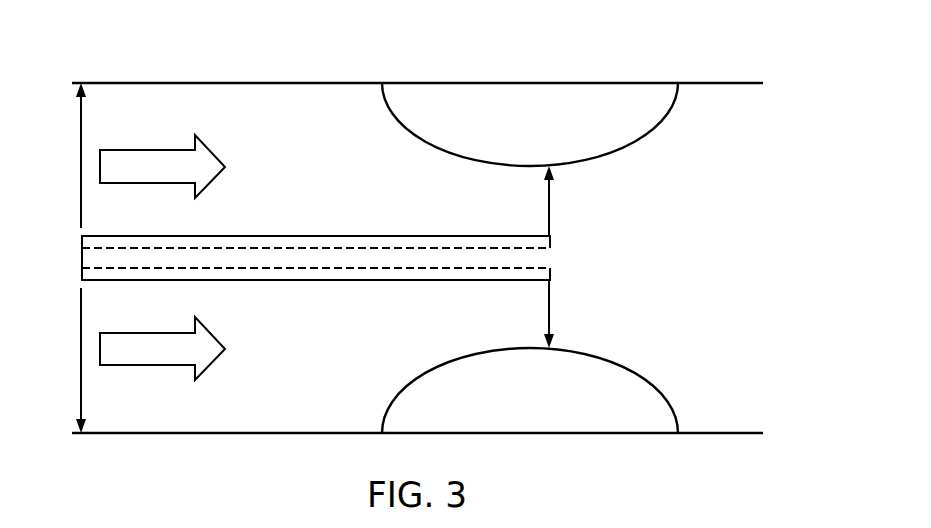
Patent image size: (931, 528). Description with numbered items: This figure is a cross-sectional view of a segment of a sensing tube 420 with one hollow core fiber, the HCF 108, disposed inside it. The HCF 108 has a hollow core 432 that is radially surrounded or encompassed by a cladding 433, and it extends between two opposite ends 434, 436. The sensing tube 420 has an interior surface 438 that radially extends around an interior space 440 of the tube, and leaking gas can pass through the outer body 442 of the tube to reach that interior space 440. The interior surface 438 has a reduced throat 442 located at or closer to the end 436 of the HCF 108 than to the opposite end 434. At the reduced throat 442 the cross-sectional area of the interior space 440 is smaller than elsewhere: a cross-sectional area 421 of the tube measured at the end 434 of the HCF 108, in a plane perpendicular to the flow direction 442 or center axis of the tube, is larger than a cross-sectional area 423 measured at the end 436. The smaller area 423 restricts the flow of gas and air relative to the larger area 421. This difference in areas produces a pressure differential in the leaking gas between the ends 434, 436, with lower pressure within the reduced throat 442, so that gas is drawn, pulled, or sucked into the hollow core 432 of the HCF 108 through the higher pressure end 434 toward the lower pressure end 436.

The hollow core fiber 108 is at (551, 279).
The sensing tube 420 is at (793, 83).
The cross-sectional area 421 is at (83, 125).
The cross-sectional area 423 is at (550, 205).
The hollow core 432 is at (293, 258).
The cladding 433 is at (290, 237).
The end of the HCF 434 is at (64, 246).
The end of the HCF 436 is at (566, 241).
The interior surface 438 is at (336, 100).
The interior space 440 is at (735, 240).
The reduced throat 442 is at (148, 172).